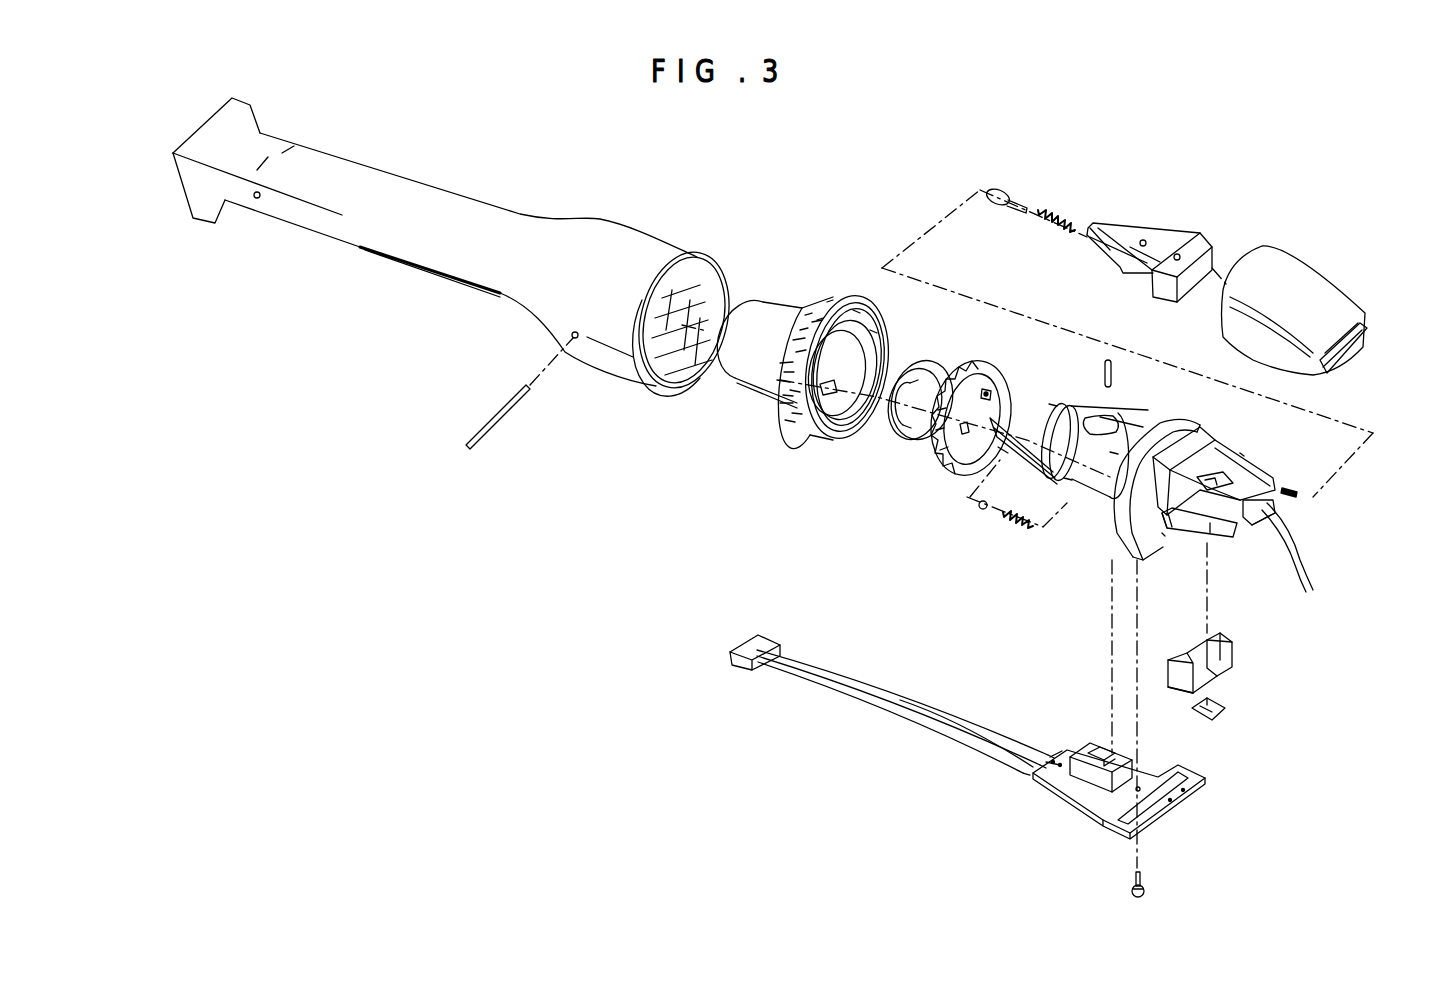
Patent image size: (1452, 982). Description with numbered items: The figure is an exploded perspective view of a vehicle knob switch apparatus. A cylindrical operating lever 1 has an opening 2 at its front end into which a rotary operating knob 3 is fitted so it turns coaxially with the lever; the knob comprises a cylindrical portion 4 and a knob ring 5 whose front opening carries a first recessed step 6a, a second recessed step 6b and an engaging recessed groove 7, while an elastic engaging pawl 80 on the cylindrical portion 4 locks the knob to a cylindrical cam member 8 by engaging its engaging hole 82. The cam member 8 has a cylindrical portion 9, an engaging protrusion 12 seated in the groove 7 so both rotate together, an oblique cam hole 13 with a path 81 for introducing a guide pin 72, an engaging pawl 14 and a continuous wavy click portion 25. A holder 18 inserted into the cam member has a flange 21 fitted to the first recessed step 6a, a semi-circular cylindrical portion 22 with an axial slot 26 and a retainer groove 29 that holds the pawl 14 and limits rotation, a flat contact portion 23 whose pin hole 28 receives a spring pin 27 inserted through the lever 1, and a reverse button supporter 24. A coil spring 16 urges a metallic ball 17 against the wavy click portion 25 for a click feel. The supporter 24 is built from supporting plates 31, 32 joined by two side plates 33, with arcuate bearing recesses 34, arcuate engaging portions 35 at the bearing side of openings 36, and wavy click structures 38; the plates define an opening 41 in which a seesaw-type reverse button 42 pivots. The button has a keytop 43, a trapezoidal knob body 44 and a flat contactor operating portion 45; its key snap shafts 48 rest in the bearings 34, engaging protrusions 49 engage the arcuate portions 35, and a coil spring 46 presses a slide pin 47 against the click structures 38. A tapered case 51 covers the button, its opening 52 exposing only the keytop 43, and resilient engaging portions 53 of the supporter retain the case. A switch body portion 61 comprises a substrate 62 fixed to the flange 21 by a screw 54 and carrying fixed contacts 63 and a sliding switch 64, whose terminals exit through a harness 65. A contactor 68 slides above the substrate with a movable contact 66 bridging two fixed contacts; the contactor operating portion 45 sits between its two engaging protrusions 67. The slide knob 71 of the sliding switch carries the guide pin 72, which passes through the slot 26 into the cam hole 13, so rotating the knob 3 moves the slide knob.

The operating lever 1 is at (360, 250).
The opening 2 is at (710, 277).
The rotary operating knob 3 is at (835, 297).
The cylindrical portion 4 is at (737, 377).
The knob ring 5 is at (787, 425).
The first recessed step 6a is at (853, 440).
The second recessed step 6b is at (833, 413).
The engaging recessed groove 7 is at (793, 433).
The cylindrical cam member 8 is at (917, 362).
The cylindrical portion 9 is at (937, 460).
The engaging protrusion 12 is at (995, 457).
The cam hole 13 is at (880, 417).
The engaging pawl 14 is at (986, 389).
The coil spring 16 is at (1017, 530).
The ball 17 is at (983, 513).
The holder 18 is at (1172, 410).
The flange 21 is at (1203, 422).
The cylindrical portion 22 is at (1083, 473).
The contact portion 23 is at (1052, 413).
The reverse button supporter 24 is at (1299, 492).
The wavy click portion 25 is at (950, 457).
The slot 26 is at (1148, 414).
The spring pin 27 is at (498, 417).
The pin hole 28 is at (1033, 453).
The retainer groove 29 is at (1110, 480).
The supporting plate 31 is at (1257, 530).
The supporting plate 32 is at (1222, 543).
The side plates 33 is at (1218, 437).
The arcuate bearing recesses 34 is at (1310, 591).
The arcuate engaging portions 35 is at (1282, 514).
The openings 36 is at (1190, 510).
The wavy click structures 38 is at (1270, 477).
The opening 41 is at (1285, 518).
The reverse button 42 is at (1160, 230).
The keytop 43 is at (1207, 235).
The knob body 44 is at (1133, 267).
The contactor operating portion 45 is at (1100, 245).
The coil spring 46 is at (1055, 207).
The slide pin 47 is at (1003, 187).
The key snap shafts 48 is at (1177, 237).
The engaging protrusions 49 is at (1140, 240).
The case 51 is at (1312, 255).
The opening 52 is at (1347, 353).
The resilient engaging portions 53 is at (1240, 453).
The screw 54 is at (1130, 882).
The switch body portion 61 is at (1083, 743).
The substrate 62 is at (1077, 800).
The fixed contacts 63 is at (1183, 790).
The sliding switch 64 is at (1063, 747).
The harness 65 is at (835, 697).
The movable contact 66 is at (1227, 720).
The engaging protrusions 67 is at (1227, 650).
The contactor 68 is at (1222, 678).
The slide knob 71 is at (1110, 753).
The guide pin 72 is at (1110, 360).
The elastic engaging pawl 80 is at (797, 310).
The path 81 is at (965, 382).
The engaging hole 82 is at (965, 434).